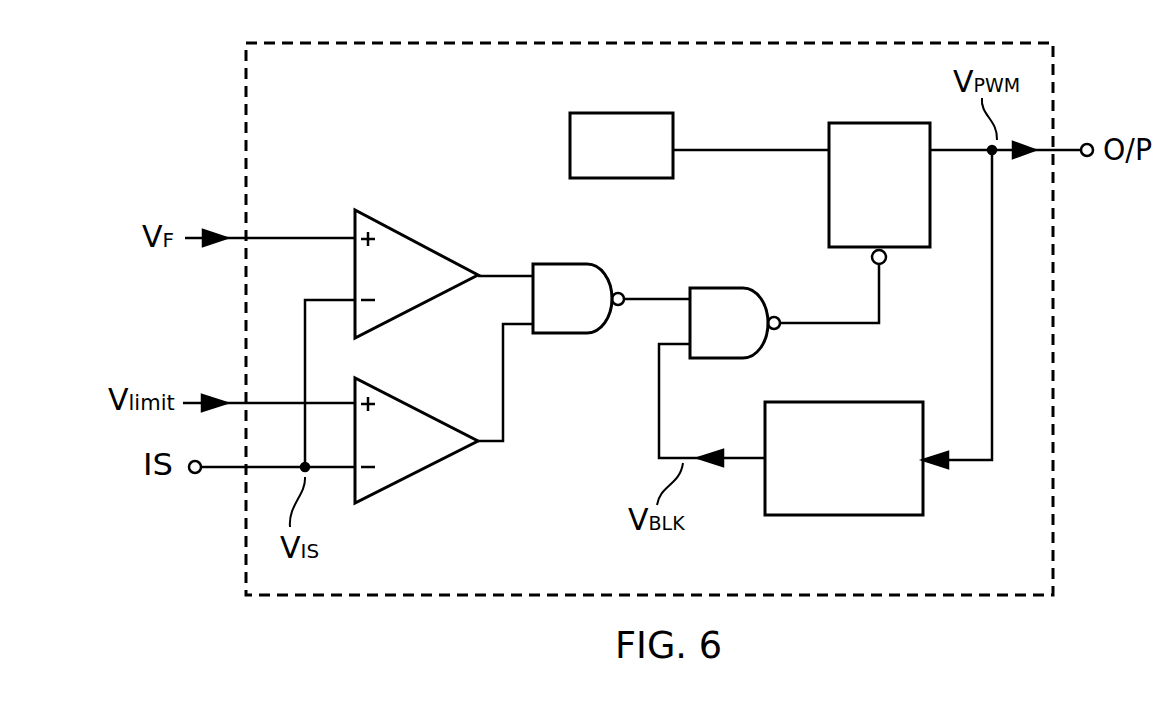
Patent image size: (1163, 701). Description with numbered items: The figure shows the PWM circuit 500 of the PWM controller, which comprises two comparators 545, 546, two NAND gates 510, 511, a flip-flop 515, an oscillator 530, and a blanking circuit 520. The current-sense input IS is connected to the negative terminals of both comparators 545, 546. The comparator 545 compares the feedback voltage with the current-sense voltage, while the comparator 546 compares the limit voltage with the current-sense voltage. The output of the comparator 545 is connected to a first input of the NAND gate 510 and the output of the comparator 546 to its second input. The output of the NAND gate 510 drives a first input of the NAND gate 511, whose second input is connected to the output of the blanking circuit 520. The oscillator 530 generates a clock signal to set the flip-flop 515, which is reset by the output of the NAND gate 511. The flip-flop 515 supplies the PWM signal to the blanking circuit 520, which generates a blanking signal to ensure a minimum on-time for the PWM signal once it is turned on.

The PWM circuit 500 is at (1053, 68).
The NAND gate 510 is at (577, 340).
The NAND gate 511 is at (728, 288).
The flip-flop 515 is at (915, 255).
The blanking circuit 520 is at (923, 497).
The oscillator 530 is at (566, 153).
The comparator 545 is at (390, 210).
The comparator 546 is at (412, 487).